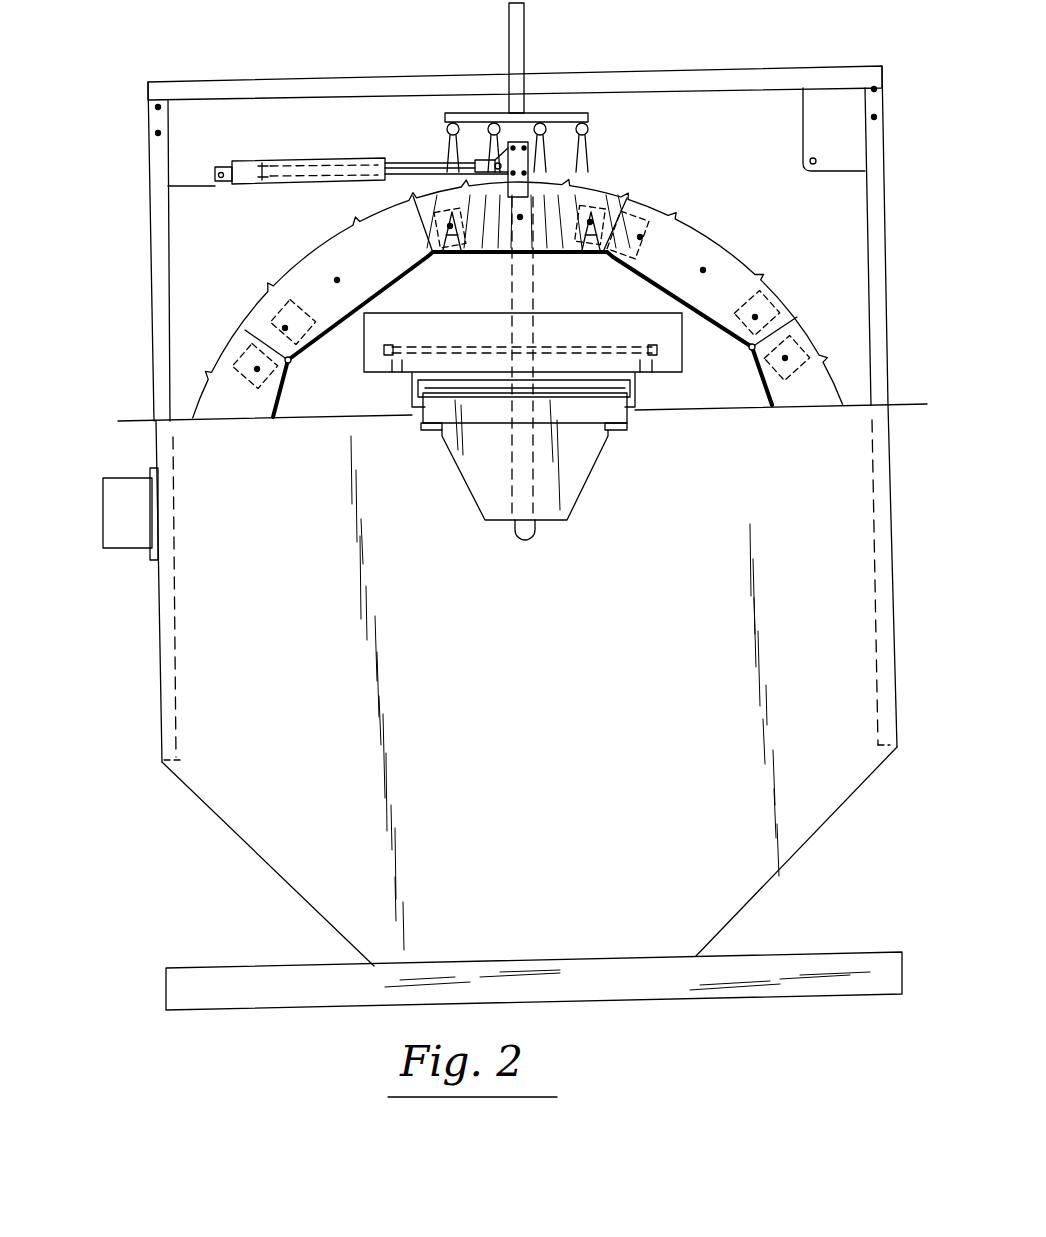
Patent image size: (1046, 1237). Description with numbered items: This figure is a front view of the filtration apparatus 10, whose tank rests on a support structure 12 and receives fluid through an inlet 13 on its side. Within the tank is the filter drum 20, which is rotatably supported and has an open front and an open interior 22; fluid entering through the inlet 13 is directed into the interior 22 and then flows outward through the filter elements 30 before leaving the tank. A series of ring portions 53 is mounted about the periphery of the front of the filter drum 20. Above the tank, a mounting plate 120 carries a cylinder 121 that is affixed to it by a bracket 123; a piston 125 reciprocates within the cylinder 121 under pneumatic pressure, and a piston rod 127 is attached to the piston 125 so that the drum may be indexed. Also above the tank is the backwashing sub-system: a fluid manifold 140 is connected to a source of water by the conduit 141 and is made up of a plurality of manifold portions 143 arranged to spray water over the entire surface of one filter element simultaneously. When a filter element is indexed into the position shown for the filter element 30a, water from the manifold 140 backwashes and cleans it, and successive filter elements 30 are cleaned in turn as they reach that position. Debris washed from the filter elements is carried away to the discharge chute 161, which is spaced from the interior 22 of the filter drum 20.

The filtration apparatus 10 is at (212, 861).
The support structure 12 is at (850, 950).
The inlet 13 is at (103, 549).
The filter drum 20 is at (703, 225).
The open interior 22 is at (323, 405).
The filter elements 30 is at (397, 283).
The filter element 30a is at (556, 262).
The ring portions 53 is at (735, 268).
The mounting plate 120 is at (196, 112).
The cylinder 121 is at (238, 160).
The bracket 123 is at (229, 186).
The piston 125 is at (270, 164).
The piston rod 127 is at (414, 160).
The fluid manifold 140 is at (537, 108).
The conduit 141 is at (524, 28).
The manifold portions 143 is at (590, 127).
The discharge chute 161 is at (580, 475).